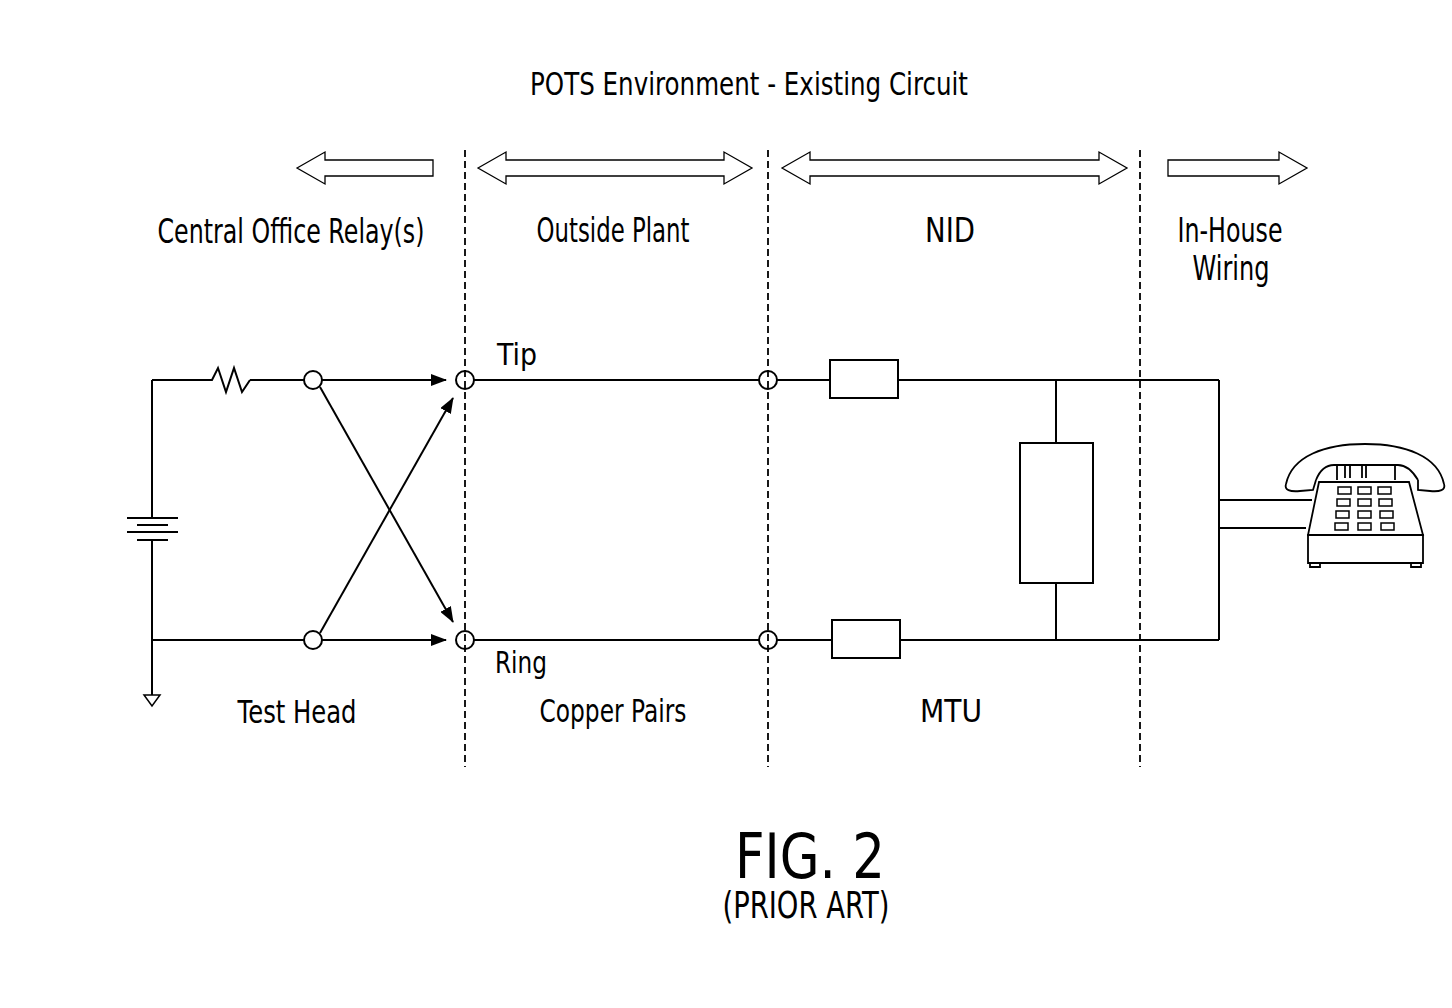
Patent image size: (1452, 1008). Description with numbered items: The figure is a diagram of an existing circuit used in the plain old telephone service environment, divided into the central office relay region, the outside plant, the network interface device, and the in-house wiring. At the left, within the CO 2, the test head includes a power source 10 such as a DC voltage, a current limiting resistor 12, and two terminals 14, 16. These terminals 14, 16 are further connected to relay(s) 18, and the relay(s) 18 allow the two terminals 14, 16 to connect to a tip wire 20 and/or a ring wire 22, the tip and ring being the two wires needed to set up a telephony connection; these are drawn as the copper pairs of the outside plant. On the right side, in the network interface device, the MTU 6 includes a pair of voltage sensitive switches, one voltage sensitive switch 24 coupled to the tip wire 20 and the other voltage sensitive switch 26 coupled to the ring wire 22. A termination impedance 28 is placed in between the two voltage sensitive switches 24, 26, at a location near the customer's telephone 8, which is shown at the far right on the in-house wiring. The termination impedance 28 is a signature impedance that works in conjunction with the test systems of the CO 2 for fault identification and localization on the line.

The central office (CO) 2 is at (219, 674).
The MTU 6 is at (1050, 674).
The customer's telephone 8 is at (1363, 443).
The power source 10 is at (130, 517).
The current limiting resistor 12 is at (212, 375).
The terminal 14 is at (310, 390).
The terminal 16 is at (311, 630).
The relay(s) 18 is at (376, 376).
The tip wire 20 is at (571, 382).
The ring wire 22 is at (570, 638).
The voltage sensitive switch 24 is at (864, 400).
The voltage sensitive switch 26 is at (864, 619).
The termination impedance 28 is at (1020, 515).